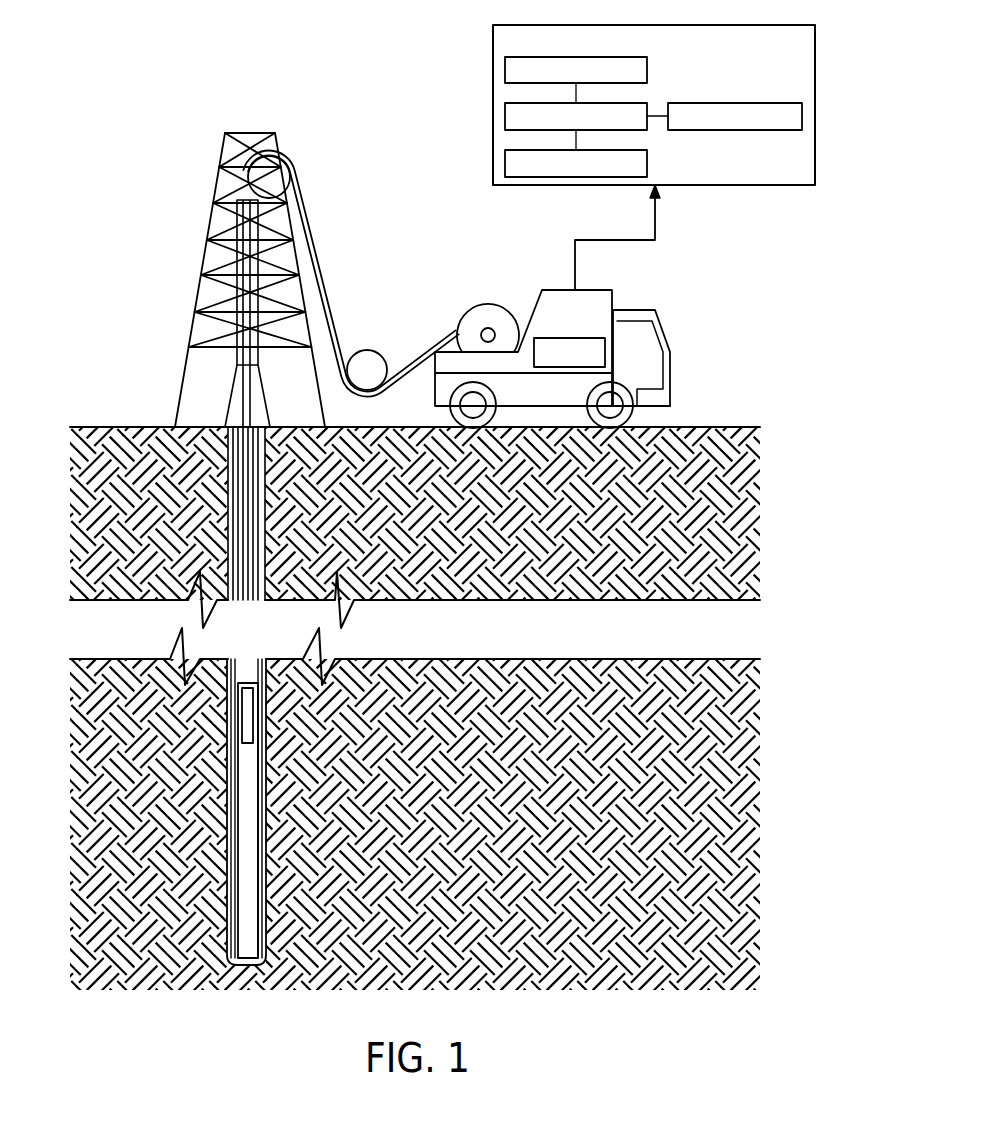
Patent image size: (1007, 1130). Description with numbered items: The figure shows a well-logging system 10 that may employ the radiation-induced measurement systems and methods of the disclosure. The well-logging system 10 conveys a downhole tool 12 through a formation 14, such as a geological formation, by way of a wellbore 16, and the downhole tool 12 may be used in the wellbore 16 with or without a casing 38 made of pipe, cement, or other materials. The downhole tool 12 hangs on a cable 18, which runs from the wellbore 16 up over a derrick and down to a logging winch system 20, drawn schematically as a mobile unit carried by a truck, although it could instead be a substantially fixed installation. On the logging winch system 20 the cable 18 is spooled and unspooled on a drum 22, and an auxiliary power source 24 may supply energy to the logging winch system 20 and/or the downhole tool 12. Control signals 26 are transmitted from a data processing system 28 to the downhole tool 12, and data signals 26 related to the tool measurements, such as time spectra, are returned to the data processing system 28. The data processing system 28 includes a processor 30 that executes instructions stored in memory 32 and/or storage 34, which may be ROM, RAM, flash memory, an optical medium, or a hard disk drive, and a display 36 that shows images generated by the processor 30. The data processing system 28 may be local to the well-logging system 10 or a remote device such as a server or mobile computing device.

The well-logging system 10 is at (141, 186).
The downhole tool 12 is at (240, 695).
The formation 14 is at (88, 765).
The wellbore 16 is at (212, 481).
The cable 18 is at (332, 273).
The logging winch system 20 is at (557, 292).
The drum 22 is at (478, 307).
The auxiliary power source 24 is at (574, 340).
The control signals / data signals 26 is at (662, 222).
The data processing system 28 is at (655, 26).
The processor 30 is at (625, 103).
The memory 32 is at (506, 68).
The storage 34 is at (655, 161).
The display 36 is at (735, 103).
The casing 38 is at (228, 927).